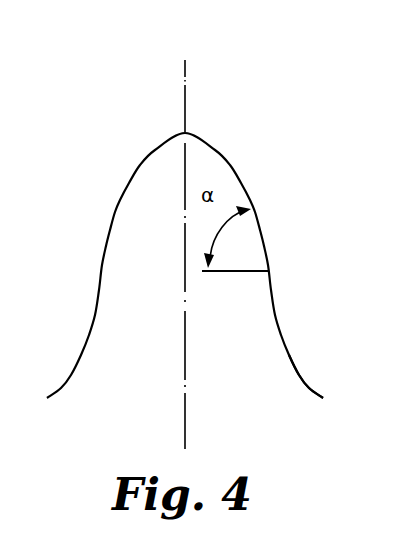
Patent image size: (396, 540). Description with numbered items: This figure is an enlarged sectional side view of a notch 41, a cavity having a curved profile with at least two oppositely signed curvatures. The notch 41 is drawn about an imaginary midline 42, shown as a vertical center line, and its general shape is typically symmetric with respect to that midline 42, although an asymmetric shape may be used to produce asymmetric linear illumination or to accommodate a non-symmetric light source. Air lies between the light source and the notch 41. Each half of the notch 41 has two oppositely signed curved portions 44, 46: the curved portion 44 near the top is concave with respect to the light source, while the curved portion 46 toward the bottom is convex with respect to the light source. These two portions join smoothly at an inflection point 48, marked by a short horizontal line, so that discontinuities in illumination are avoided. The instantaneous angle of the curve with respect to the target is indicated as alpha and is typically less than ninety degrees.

The notch 41 is at (257, 62).
The imaginary midline 42 is at (186, 93).
The curved portion 44 is at (240, 172).
The curved portion 46 is at (291, 367).
The inflection point 48 is at (270, 285).